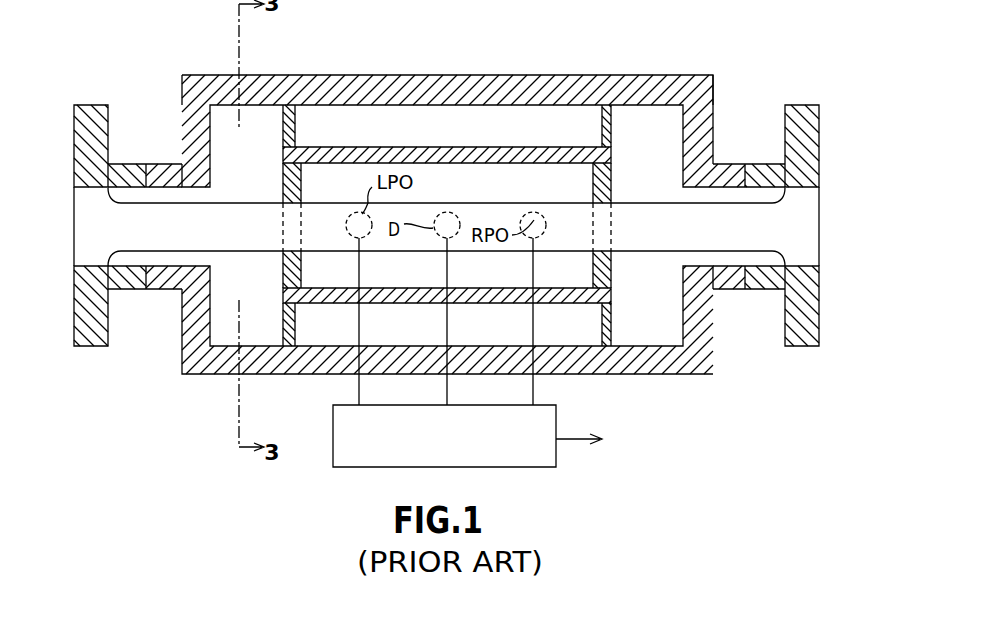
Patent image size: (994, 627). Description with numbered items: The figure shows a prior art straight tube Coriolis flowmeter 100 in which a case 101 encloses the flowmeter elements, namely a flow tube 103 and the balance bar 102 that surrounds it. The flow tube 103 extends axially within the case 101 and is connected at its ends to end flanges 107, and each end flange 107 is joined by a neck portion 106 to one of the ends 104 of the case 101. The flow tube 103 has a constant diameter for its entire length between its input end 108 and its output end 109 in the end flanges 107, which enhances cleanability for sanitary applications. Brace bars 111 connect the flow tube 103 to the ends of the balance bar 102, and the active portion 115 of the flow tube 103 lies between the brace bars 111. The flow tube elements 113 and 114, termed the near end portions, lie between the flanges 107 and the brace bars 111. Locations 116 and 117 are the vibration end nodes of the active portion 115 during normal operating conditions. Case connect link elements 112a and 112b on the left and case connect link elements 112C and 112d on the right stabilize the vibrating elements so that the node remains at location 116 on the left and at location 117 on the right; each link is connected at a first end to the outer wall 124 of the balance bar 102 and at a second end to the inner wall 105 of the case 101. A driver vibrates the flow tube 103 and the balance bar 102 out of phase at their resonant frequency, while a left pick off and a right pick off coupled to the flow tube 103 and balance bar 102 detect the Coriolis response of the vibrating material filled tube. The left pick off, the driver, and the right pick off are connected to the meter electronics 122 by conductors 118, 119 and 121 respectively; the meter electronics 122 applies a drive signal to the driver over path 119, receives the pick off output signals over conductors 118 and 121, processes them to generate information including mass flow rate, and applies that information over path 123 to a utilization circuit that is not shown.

The straight tube Coriolis flowmeter 100 is at (405, 55).
The case 101 is at (567, 75).
The balance bar 102 is at (362, 147).
The flow tube 103 is at (494, 214).
The ends of case 104 is at (182, 103).
The inner wall of case 105 is at (255, 112).
The neck portion 106 is at (141, 164).
The end flange 107 is at (74, 207).
The input end 108 is at (74, 253).
The output end 109 is at (820, 248).
The brace bar 111 is at (303, 181).
The case connect link element 112a is at (283, 128).
The case connect link element 112b is at (295, 334).
The case connect link element 112C is at (601, 128).
The case connect link element 112d is at (602, 335).
The near end portion of flow tube 113 is at (207, 203).
The near end portion of flow tube 114 is at (683, 203).
The active portion of flow tube 115 is at (428, 192).
The vibration end node 116 is at (288, 228).
The vibration end node 117 is at (606, 224).
The conductor 118 is at (359, 388).
The conductor 119 is at (447, 395).
The conductor 121 is at (533, 385).
The meter electronics 122 is at (427, 459).
The path 123 is at (578, 439).
The outer wall of balance bar 124 is at (513, 147).